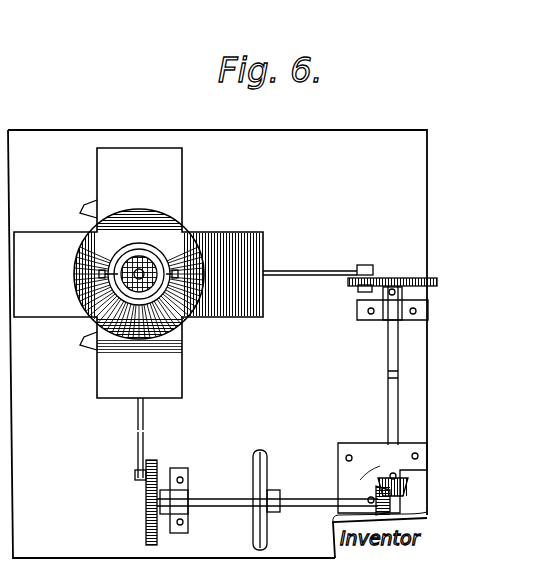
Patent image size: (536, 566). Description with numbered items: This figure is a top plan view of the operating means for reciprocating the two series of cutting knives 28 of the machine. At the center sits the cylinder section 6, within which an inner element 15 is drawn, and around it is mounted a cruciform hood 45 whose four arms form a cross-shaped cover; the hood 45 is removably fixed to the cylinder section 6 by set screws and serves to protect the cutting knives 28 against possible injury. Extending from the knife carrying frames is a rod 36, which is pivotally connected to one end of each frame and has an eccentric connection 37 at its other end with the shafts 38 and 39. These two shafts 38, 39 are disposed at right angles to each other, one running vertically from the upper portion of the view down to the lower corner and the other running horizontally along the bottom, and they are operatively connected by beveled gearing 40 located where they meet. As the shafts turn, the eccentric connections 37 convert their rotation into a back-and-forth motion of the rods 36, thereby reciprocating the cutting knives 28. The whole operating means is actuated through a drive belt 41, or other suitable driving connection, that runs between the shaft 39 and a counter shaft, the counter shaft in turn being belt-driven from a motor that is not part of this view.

The cylinder section 6 is at (133, 262).
The commutator 15 is at (147, 262).
The cutting knives 28 is at (118, 274).
The rod 36 is at (297, 277).
The eccentric connection 37 is at (384, 276).
The shaft 38 is at (388, 343).
The shaft 39 is at (205, 499).
The beveled gearing 40 is at (382, 464).
The drive belt 41 is at (259, 454).
The cruciform hood 45 is at (182, 190).